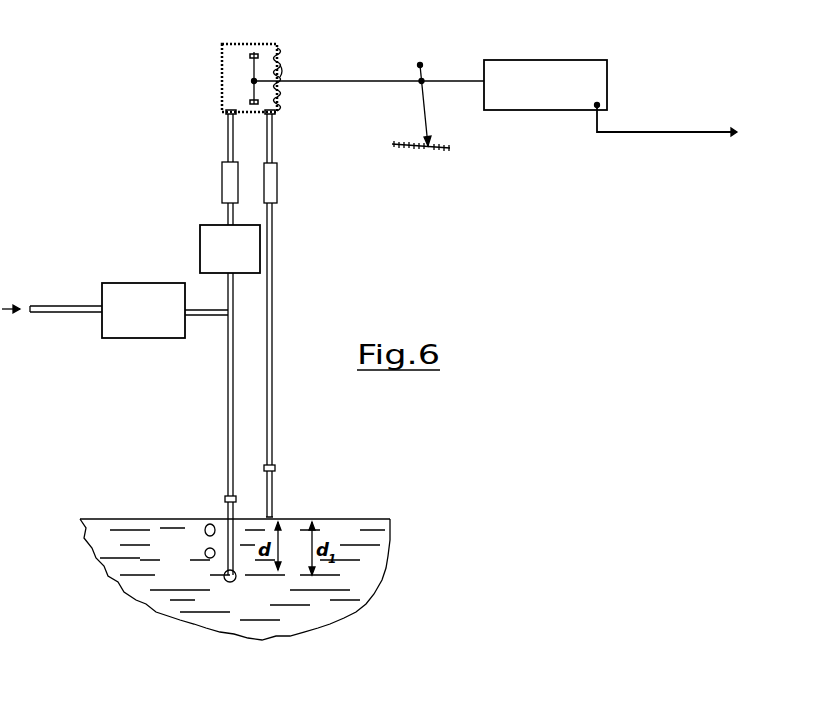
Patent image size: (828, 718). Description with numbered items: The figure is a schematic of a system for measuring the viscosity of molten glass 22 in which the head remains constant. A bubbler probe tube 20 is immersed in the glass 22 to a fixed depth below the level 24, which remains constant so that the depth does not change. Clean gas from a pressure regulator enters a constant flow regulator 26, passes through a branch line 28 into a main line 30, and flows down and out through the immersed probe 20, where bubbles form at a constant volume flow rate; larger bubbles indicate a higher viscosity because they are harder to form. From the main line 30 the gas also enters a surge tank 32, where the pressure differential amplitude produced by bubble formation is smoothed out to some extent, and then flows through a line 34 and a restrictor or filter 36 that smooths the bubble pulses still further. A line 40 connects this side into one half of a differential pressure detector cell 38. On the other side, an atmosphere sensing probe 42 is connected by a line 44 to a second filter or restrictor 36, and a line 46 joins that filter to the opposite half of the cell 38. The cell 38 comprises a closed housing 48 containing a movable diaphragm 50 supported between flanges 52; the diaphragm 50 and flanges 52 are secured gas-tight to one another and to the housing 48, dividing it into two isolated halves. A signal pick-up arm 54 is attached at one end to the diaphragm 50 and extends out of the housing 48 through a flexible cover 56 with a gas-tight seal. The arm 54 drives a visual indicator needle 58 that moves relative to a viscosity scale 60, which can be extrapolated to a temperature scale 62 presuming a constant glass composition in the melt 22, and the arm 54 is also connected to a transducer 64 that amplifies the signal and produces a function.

The probe tube 20 is at (226, 504).
The molten glass 22 is at (366, 530).
The level 24 is at (60, 306).
The constant flow regulator 26 is at (154, 322).
The branch line 28 is at (206, 318).
The main line 30 is at (228, 466).
The surge tank 32 is at (242, 259).
The line 34 is at (228, 212).
The restrictor or filter 36 is at (222, 172).
The differential pressure detector cell 38 is at (218, 42).
The line 40 is at (226, 132).
The atmosphere sensing probe 42 is at (274, 486).
The line 44 is at (274, 458).
The line 46 is at (274, 136).
The closed housing 48 is at (283, 47).
The movable diaphragm 50 is at (252, 74).
The flanges 52 is at (252, 53).
The signal pick-up arm 54 is at (342, 80).
The flexible cover 56 is at (284, 70).
The visual indicator needle 58 is at (416, 112).
The viscosity scale 60 is at (444, 142).
The temperature scale 62 is at (444, 152).
The transducer 64 is at (520, 60).